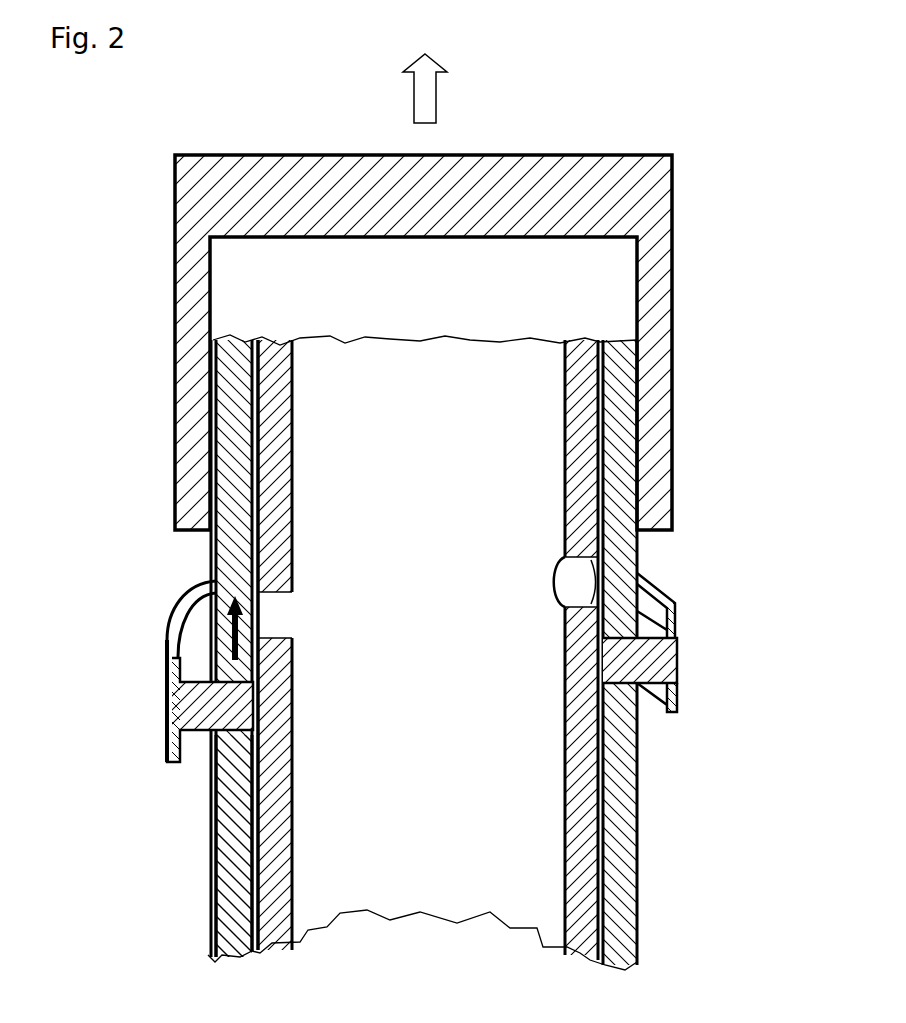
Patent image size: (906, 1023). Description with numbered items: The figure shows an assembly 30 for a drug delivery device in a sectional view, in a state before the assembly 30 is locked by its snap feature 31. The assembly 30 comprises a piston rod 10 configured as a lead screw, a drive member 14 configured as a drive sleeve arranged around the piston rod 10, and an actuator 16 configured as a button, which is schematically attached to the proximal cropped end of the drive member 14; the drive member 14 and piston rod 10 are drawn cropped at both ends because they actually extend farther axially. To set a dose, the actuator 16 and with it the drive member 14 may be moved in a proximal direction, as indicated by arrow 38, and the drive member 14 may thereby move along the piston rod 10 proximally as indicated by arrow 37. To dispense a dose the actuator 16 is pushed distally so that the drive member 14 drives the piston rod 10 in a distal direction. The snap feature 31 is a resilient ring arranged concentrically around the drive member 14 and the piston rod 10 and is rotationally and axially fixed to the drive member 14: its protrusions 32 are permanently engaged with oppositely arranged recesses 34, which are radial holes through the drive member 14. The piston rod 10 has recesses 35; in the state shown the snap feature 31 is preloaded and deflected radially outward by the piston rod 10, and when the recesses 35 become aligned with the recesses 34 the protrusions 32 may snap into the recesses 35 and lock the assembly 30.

The piston rod 10 is at (600, 487).
The drive member 14 is at (625, 438).
The actuator 16 is at (553, 190).
The assembly 30 is at (408, 418).
The snap feature 31 is at (620, 660).
The protrusions 32 is at (207, 693).
The recesses 34 is at (220, 747).
The recesses 35 is at (245, 565).
The arrow 37 is at (217, 613).
The arrow 38 is at (425, 102).